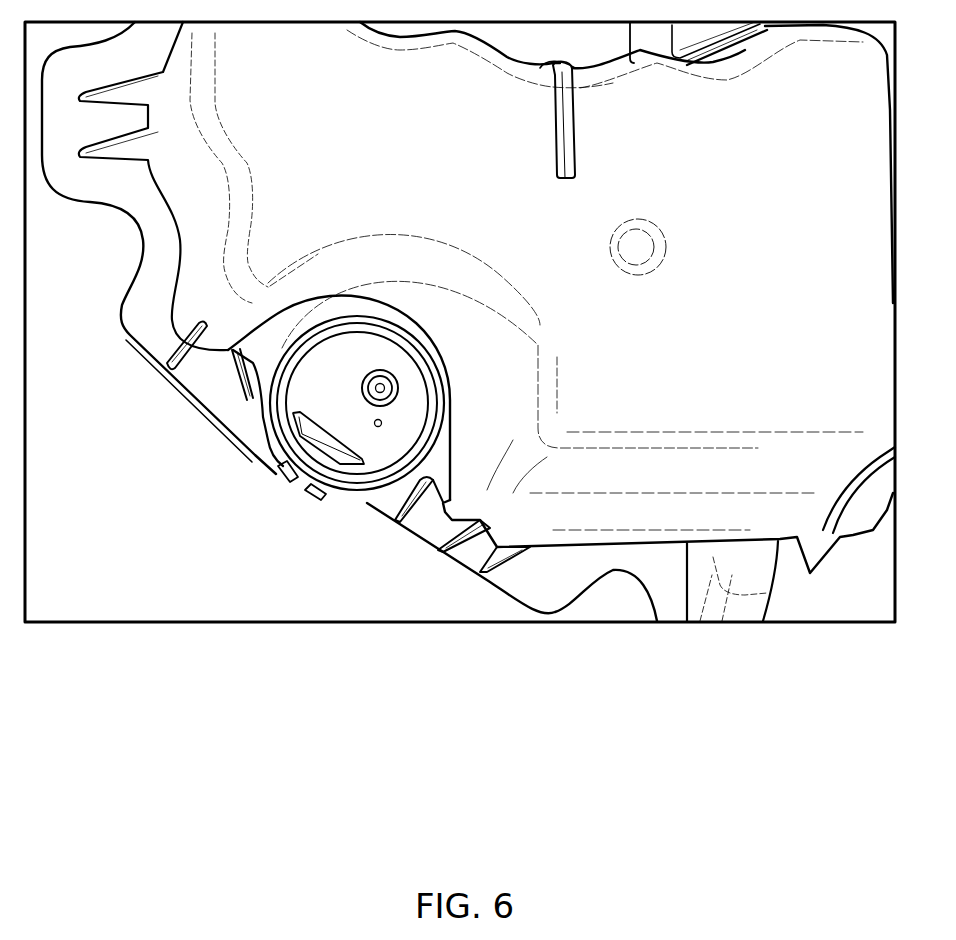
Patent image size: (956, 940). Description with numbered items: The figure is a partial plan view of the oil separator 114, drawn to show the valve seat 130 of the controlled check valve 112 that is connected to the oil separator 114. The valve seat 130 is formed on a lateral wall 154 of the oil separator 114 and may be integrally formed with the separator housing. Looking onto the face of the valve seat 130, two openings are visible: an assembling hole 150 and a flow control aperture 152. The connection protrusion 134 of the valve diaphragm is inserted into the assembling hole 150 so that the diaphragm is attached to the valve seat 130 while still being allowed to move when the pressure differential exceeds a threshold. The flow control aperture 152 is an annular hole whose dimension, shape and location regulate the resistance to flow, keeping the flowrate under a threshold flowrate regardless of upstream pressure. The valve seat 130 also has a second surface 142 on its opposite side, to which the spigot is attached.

The oil separator 114 is at (874, 256).
The controlled check valve 112 is at (272, 473).
The valve seat 130 is at (309, 397).
The connection protrusion 134 is at (385, 375).
The second surface 142 is at (358, 447).
The assembling hole 150 is at (400, 392).
The flow control aperture 152 is at (383, 424).
The lateral wall 154 is at (240, 400).